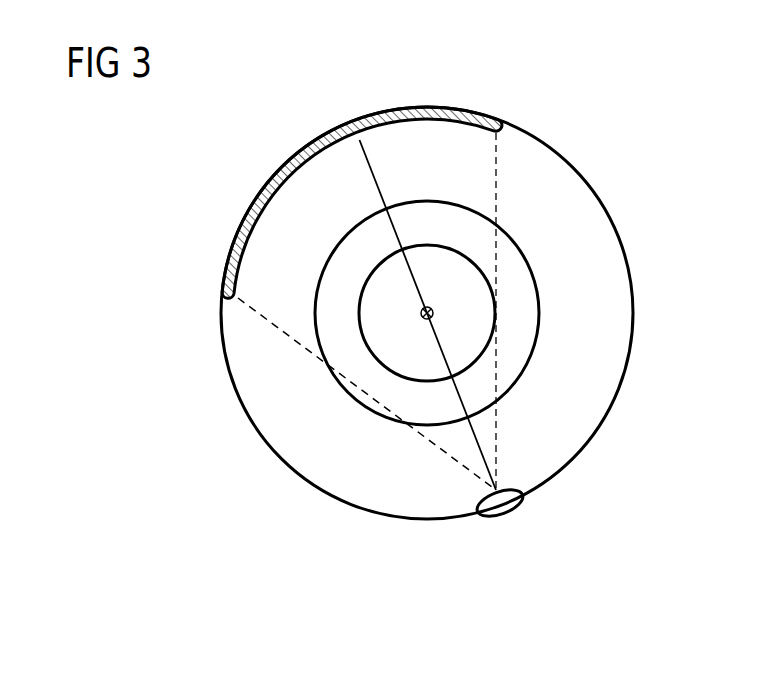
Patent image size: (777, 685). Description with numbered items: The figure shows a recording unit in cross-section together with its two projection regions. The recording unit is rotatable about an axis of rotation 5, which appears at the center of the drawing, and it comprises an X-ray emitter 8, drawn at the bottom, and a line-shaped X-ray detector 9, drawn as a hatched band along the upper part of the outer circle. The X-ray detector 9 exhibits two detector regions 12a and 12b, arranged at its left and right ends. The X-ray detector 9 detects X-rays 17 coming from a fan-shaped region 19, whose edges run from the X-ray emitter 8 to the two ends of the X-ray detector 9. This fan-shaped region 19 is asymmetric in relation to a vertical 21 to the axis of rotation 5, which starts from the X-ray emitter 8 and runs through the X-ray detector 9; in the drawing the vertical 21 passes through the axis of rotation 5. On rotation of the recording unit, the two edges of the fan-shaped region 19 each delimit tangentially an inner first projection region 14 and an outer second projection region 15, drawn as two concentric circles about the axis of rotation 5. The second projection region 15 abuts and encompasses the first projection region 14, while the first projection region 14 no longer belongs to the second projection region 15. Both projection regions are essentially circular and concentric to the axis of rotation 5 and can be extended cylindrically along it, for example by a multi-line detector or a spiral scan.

The axis of rotation 5 is at (421, 314).
The X-ray emitter 8 is at (497, 514).
The X-ray detector 9 is at (320, 127).
The detector region 12a is at (262, 186).
The detector region 12b is at (430, 105).
The first projection region 14 is at (473, 310).
The second projection region 15 is at (510, 361).
The X-rays 17 is at (367, 394).
The fan-shaped region 19 is at (247, 322).
The vertical 21 is at (360, 140).